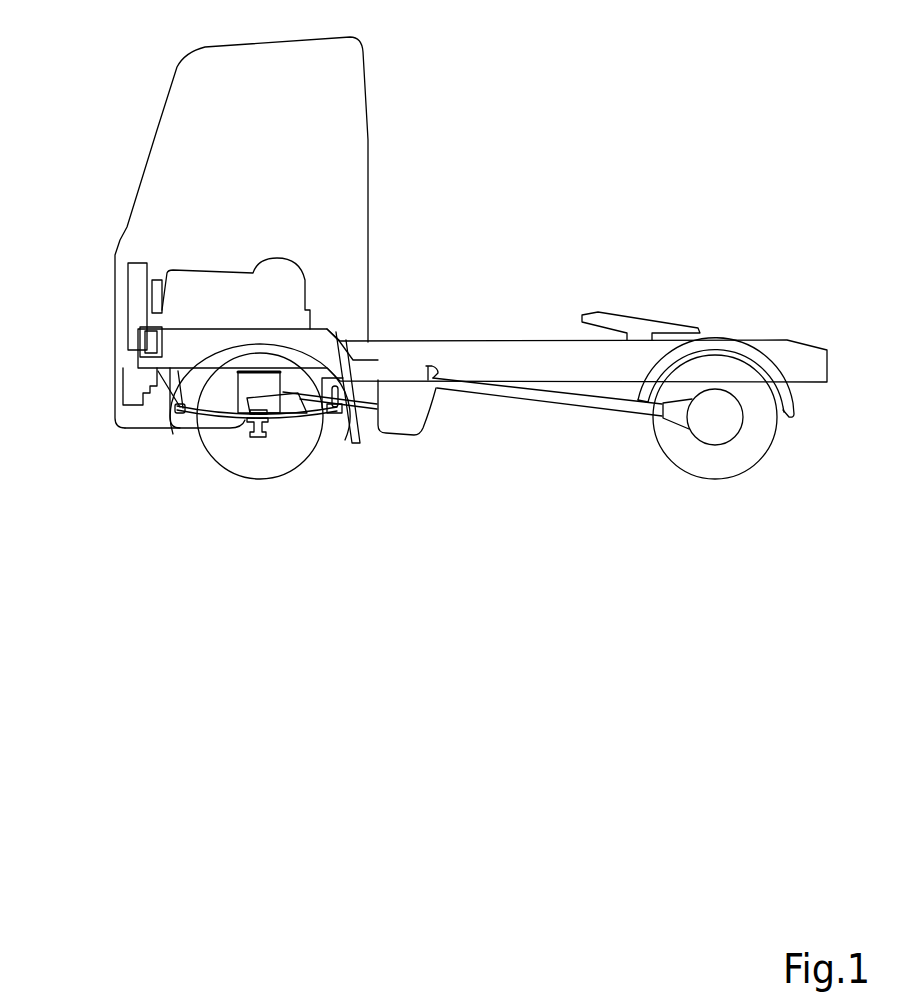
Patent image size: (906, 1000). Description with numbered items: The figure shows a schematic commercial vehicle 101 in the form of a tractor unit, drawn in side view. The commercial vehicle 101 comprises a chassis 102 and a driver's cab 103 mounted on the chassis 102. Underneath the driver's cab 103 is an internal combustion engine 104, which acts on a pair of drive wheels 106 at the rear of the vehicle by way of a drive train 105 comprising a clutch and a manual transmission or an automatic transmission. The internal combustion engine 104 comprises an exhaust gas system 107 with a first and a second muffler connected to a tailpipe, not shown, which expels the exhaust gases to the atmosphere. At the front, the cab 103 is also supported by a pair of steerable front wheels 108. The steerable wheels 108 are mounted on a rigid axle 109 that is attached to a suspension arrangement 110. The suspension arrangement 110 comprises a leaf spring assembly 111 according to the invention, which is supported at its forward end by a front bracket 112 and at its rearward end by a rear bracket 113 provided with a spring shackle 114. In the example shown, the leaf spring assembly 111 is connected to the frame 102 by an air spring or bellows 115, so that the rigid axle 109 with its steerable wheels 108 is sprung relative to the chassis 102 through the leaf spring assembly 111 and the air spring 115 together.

The commercial vehicle 101 is at (460, 108).
The chassis 102 is at (497, 340).
The driver's cab 103 is at (155, 147).
The internal combustion engine 104 is at (180, 308).
The drive train 105 is at (560, 400).
The drive wheels 106 is at (733, 463).
The exhaust gas system 107 is at (415, 425).
The steerable front wheels 108 is at (250, 470).
The rigid axle 109 is at (255, 438).
The suspension arrangement 110 is at (291, 454).
The leaf spring assembly 111 is at (182, 388).
The front bracket 112 is at (168, 424).
The rear bracket 113 is at (358, 400).
The spring shackle 114 is at (338, 415).
The air spring or bellows 115 is at (245, 392).